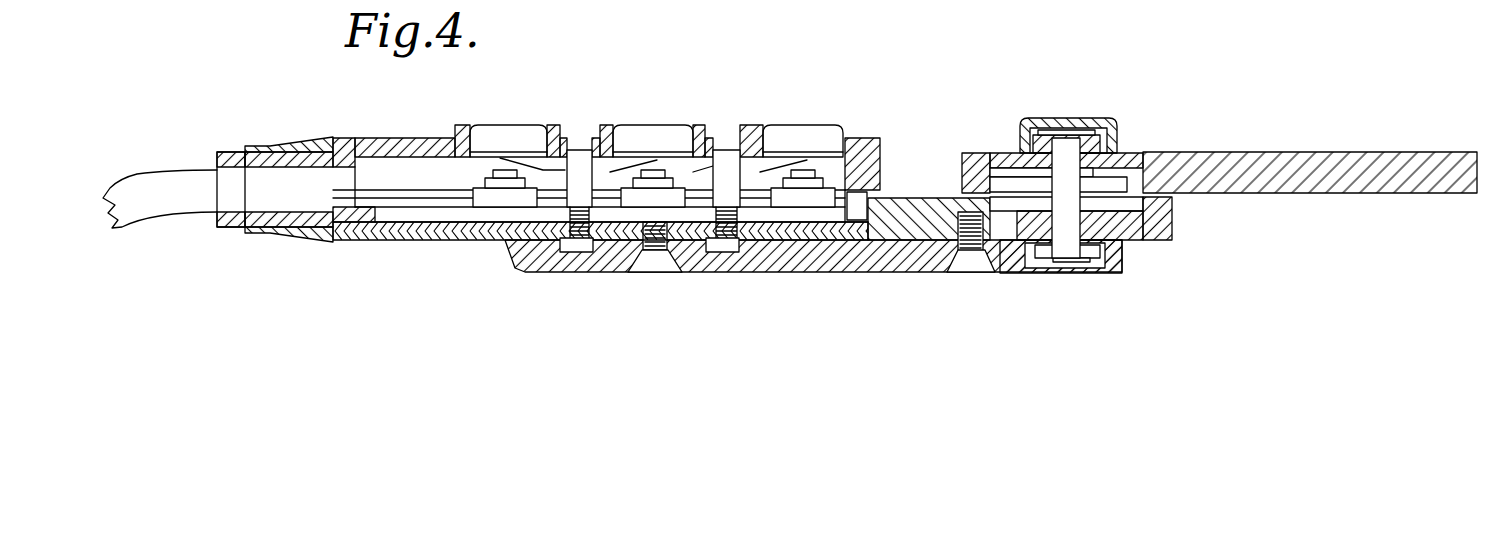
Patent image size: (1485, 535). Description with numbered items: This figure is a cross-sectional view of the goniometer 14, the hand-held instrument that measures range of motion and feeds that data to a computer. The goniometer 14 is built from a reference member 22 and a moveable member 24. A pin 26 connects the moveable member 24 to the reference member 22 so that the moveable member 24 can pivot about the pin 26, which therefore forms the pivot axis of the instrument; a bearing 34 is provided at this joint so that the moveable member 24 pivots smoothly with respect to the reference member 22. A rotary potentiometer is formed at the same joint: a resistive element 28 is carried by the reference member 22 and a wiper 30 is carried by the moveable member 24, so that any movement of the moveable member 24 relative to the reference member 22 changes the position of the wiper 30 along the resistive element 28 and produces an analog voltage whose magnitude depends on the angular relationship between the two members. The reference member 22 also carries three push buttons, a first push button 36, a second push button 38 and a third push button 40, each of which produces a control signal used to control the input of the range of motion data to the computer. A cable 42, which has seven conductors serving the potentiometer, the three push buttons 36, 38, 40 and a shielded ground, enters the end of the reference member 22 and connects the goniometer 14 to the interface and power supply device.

The goniometer 14 is at (420, 320).
The reference member 22 is at (385, 138).
The moveable member 24 is at (1312, 158).
The pin 26 is at (1067, 252).
The resistive element 28 is at (1172, 203).
The wiper 30 is at (1128, 183).
The bearing 34 is at (988, 152).
The first push button 36 is at (655, 128).
The second push button 38 is at (805, 128).
The third push button 40 is at (507, 128).
The cable 42 is at (157, 208).